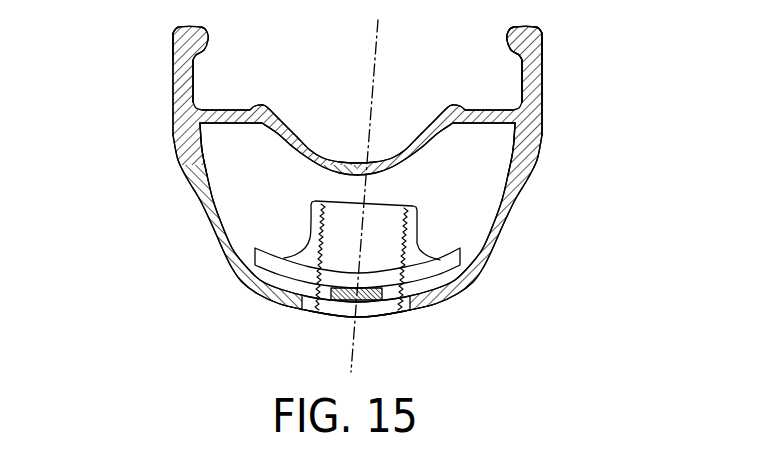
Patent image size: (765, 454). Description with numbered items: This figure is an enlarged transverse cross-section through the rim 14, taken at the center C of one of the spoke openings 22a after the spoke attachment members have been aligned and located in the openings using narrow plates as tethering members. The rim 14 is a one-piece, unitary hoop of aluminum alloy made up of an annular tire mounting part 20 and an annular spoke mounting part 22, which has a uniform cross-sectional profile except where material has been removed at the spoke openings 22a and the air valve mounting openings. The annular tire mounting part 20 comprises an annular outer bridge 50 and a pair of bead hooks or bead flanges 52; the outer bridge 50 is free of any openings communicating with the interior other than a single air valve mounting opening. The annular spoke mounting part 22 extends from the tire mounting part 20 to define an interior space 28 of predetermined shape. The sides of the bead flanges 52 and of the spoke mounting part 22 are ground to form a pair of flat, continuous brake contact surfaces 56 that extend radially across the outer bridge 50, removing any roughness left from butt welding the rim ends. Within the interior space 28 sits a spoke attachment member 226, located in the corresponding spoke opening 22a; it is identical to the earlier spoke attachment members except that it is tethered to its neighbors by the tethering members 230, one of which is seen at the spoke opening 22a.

The rim 14 is at (162, 64).
The annular tire mounting part 20 is at (552, 53).
The annular spoke mounting part 22 is at (524, 216).
The spoke opening 22a is at (404, 311).
The interior space 28 is at (478, 176).
The annular outer bridge 50 is at (272, 107).
The bead flange 52 is at (209, 36).
The brake contact surface 56 is at (173, 83).
The spoke attachment member 226 is at (430, 229).
The tethering member 230 is at (343, 309).
The center of spoke opening C is at (358, 338).